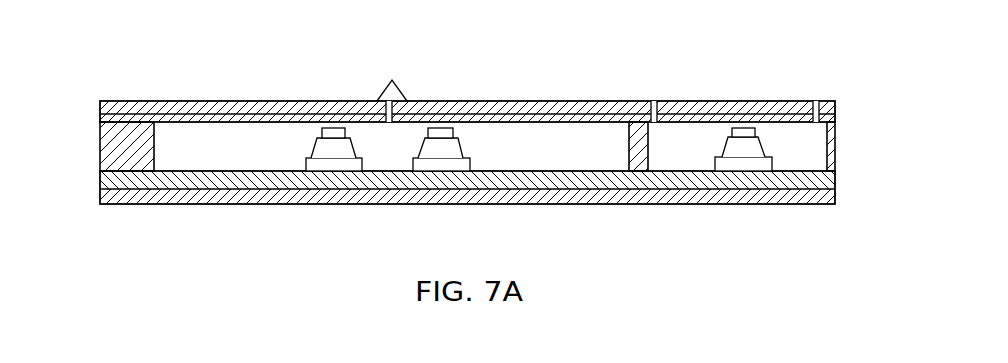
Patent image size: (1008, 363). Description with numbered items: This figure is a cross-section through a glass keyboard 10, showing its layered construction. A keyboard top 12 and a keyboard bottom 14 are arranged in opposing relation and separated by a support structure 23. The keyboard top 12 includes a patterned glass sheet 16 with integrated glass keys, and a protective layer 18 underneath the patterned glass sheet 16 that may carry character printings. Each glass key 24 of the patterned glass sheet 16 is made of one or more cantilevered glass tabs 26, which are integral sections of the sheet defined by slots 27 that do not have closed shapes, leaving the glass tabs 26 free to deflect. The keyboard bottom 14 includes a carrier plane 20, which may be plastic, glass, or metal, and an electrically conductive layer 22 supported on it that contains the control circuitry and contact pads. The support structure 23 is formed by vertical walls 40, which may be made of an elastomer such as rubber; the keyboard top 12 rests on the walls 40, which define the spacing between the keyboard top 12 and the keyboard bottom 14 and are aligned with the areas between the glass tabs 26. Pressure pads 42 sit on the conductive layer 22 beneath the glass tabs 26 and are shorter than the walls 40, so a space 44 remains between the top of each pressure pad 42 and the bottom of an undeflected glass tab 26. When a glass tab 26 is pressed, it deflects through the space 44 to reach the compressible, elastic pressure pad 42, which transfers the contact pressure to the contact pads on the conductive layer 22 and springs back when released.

The glass keyboard 10 is at (519, 90).
The keyboard top 12 is at (443, 87).
The keyboard bottom 14 is at (443, 153).
The patterned glass sheet 16 is at (145, 101).
The protective layer 18 is at (587, 117).
The carrier plane 20 is at (263, 198).
The electrically conductive layer 22 is at (492, 182).
The support structure 23 is at (99, 148).
The glass key 24 is at (392, 80).
The cantilevered glass tab 26 is at (228, 108).
The slot 27 is at (654, 102).
The vertical wall 40 is at (140, 160).
The pressure pad 42 is at (335, 167).
The space 44 is at (333, 127).